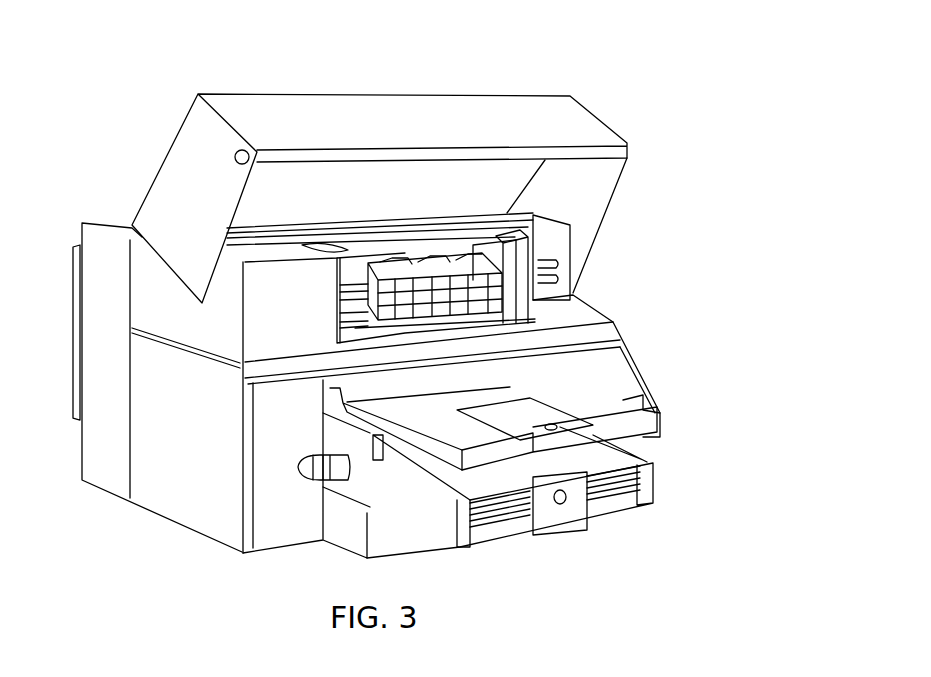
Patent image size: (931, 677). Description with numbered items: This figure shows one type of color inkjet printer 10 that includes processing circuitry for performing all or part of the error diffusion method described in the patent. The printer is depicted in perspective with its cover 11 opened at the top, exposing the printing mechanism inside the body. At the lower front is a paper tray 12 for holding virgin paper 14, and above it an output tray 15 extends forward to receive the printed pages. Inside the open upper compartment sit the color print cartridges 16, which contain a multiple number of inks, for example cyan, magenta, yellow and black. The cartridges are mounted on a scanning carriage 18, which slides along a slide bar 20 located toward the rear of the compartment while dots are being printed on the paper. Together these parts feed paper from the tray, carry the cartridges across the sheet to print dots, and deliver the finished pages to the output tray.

The color inkjet printer 10 is at (528, 66).
The cover 11 is at (165, 150).
The paper tray 12 is at (493, 528).
The virgin paper 14 is at (630, 487).
The output tray 15 is at (637, 390).
The color print cartridges 16 is at (352, 258).
The scanning carriage 18 is at (337, 320).
The slide bar 20 is at (575, 285).